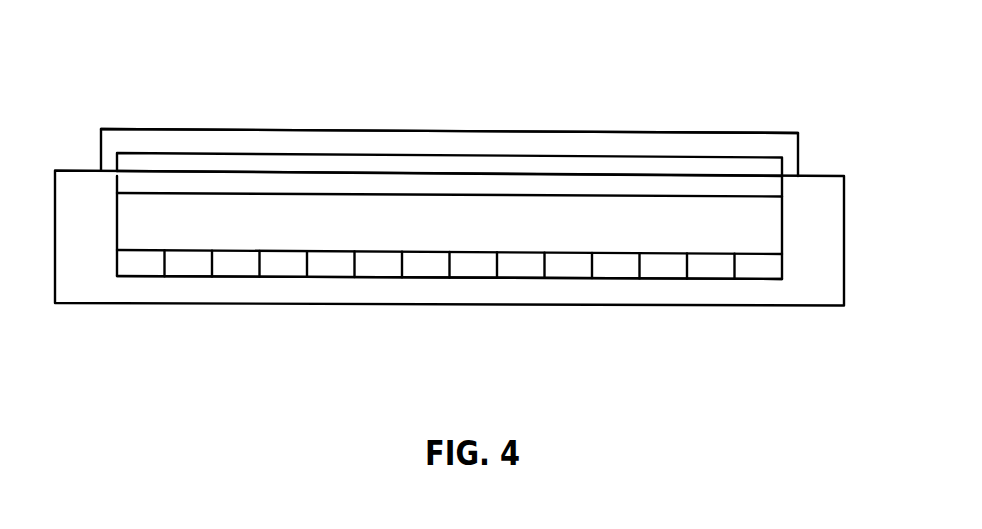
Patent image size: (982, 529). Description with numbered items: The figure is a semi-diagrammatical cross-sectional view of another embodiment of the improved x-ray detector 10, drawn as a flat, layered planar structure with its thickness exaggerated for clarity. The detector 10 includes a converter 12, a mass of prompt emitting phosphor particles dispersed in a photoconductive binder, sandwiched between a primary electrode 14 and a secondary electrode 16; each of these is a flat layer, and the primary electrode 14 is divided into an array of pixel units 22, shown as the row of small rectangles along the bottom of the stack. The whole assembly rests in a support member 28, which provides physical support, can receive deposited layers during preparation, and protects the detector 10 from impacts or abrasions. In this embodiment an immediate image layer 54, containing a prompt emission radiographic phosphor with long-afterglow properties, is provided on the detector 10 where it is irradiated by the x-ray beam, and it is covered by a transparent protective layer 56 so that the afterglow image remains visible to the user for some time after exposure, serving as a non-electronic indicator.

The x-ray detector 10 is at (549, 97).
The converter 12 is at (783, 220).
The primary electrode 14 is at (783, 265).
The secondary electrode 16 is at (783, 184).
The pixel units 22 is at (380, 268).
The support member 28 is at (150, 304).
The immediate image layer 54 is at (240, 155).
The transparent protective layer 56 is at (397, 131).